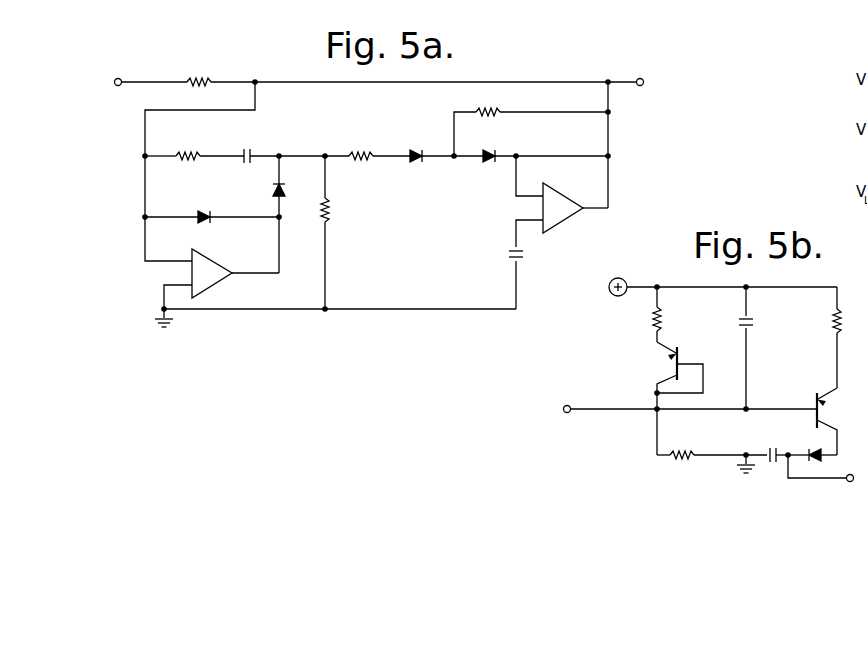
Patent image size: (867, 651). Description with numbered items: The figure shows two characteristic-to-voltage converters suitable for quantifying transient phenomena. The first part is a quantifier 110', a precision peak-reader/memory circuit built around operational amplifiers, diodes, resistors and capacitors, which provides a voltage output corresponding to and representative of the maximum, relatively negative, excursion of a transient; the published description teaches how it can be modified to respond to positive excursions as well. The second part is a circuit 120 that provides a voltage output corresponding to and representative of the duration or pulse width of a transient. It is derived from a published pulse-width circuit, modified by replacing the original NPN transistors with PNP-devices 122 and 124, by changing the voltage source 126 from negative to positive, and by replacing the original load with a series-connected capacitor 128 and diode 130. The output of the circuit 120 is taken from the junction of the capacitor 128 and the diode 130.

In FIG. 5A, the quantifier 110' is at (377, 218).
In FIG. 5B, the circuit 120 is at (624, 427).
In FIG. 5B, the PNP-device 122 is at (681, 353).
In FIG. 5B, the PNP-device 124 is at (815, 397).
In FIG. 5B, the voltage source 126 is at (636, 265).
In FIG. 5B, the capacitor 128 is at (769, 446).
In FIG. 5B, the diode 130 is at (811, 450).